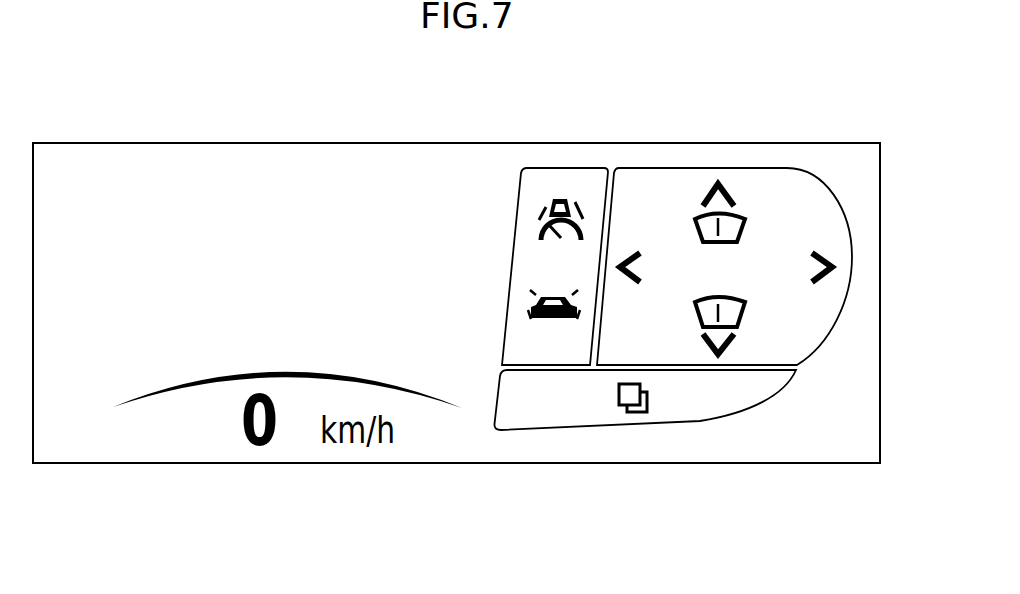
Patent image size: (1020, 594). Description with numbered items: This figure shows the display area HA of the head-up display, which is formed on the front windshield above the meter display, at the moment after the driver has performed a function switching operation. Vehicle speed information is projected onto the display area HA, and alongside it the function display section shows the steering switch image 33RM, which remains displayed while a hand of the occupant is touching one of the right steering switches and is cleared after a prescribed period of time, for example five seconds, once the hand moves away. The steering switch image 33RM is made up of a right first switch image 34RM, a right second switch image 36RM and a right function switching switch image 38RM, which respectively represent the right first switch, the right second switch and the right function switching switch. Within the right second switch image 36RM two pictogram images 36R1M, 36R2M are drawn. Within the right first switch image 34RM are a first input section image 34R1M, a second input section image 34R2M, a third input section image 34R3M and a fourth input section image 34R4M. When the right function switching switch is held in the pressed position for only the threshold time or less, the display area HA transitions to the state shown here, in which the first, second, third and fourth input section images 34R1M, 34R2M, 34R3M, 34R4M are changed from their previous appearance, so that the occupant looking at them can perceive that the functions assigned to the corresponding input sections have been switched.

The display area HA is at (72, 143).
The steering switch image 33RM is at (654, 314).
The right second switch image 36RM is at (507, 233).
The cruise control switch image 36R1M is at (543, 233).
The following distance switch image 36R2M is at (530, 317).
The right first switch image 34RM is at (734, 299).
The first input section image 34R1M is at (700, 212).
The second input section image 34R2M is at (633, 283).
The third input section image 34R3M is at (824, 262).
The fourth input section image 34R4M is at (740, 324).
The right function switching switch image 38RM is at (678, 427).